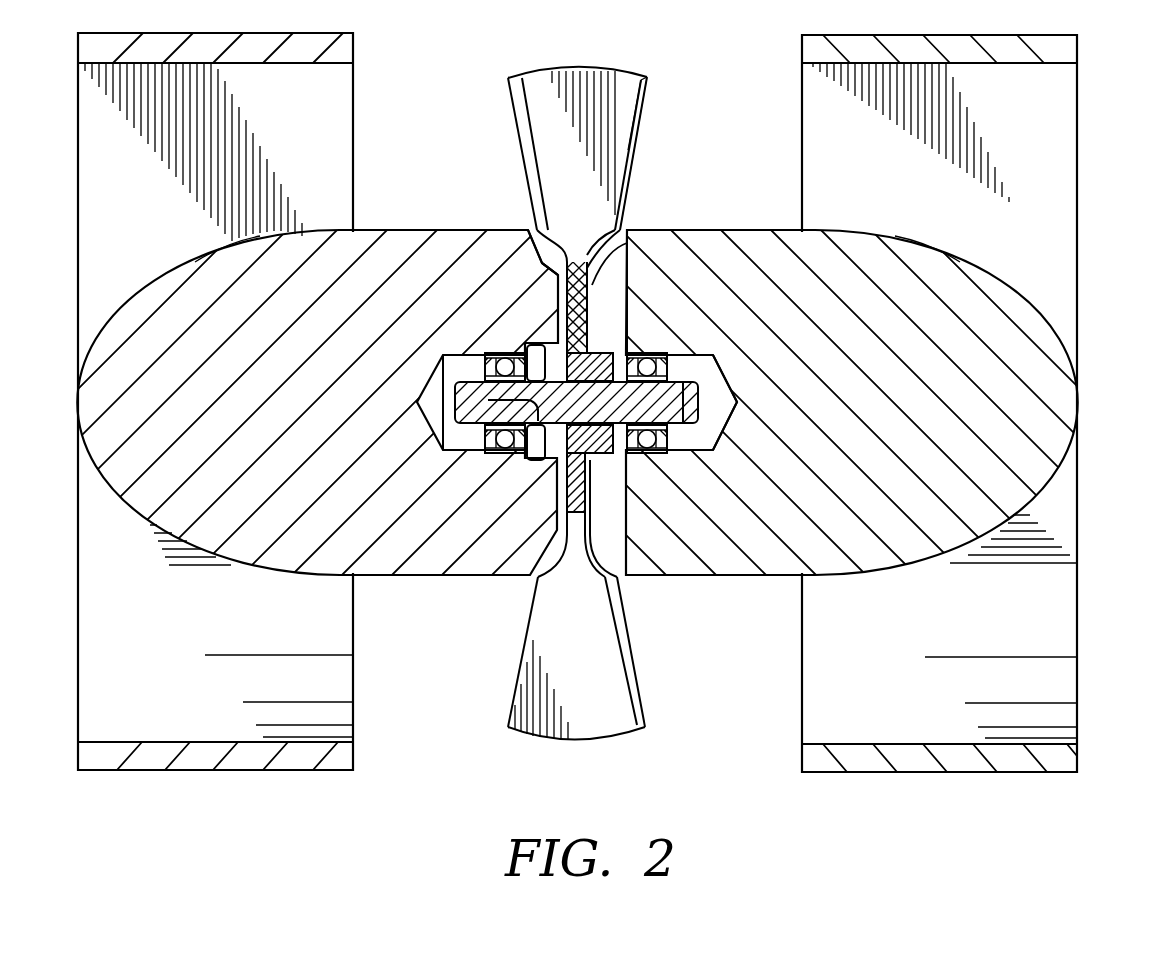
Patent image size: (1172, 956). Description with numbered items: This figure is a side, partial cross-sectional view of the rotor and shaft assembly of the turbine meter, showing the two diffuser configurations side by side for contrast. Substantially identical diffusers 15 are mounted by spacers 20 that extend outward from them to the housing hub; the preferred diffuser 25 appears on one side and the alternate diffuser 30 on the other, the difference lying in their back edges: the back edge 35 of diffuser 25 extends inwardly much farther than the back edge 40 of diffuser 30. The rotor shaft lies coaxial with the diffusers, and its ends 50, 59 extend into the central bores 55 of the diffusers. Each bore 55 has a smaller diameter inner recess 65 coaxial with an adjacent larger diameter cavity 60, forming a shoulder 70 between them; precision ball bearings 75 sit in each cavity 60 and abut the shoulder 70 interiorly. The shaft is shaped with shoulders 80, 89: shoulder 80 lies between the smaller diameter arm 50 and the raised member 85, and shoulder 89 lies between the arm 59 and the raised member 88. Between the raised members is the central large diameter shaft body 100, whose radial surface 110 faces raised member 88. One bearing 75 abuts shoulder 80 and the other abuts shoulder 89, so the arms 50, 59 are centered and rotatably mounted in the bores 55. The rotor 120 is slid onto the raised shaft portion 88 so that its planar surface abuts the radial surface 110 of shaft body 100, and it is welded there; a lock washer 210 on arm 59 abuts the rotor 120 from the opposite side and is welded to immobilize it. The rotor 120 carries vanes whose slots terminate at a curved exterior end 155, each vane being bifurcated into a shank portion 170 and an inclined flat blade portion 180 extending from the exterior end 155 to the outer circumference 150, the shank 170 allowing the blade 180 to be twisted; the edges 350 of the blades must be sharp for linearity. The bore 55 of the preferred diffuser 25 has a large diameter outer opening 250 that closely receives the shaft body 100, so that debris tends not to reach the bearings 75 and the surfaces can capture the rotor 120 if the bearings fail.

The diffuser 15 is at (170, 291).
The spacer 20 is at (1063, 149).
The preferred diffuser 25 is at (188, 259).
The alternate diffuser 30 is at (916, 246).
The back edge 35 is at (546, 257).
The back edge 40 is at (617, 238).
The shaft end 50 is at (440, 398).
The central bore 55 is at (456, 357).
The shaft end 59 is at (716, 385).
The cavity 60 is at (662, 449).
The inner recess 65 is at (438, 443).
The shoulder 70 is at (449, 455).
The bearing 75 is at (493, 455).
The shoulder 80 is at (530, 352).
The raised member 85 is at (488, 400).
The raised member 88 is at (590, 458).
The shoulder 89 is at (610, 380).
The large diameter shaft body 100 is at (541, 459).
The radial surface 110 is at (630, 298).
The rotor 120 is at (628, 272).
The outer circumference 150 is at (556, 72).
The exterior end 155 is at (596, 232).
The shank portion 170 is at (549, 263).
The blade portion 180 is at (636, 124).
The lock washer 210 is at (600, 347).
The outer opening 250 is at (556, 320).
The blade edge 350 is at (652, 88).